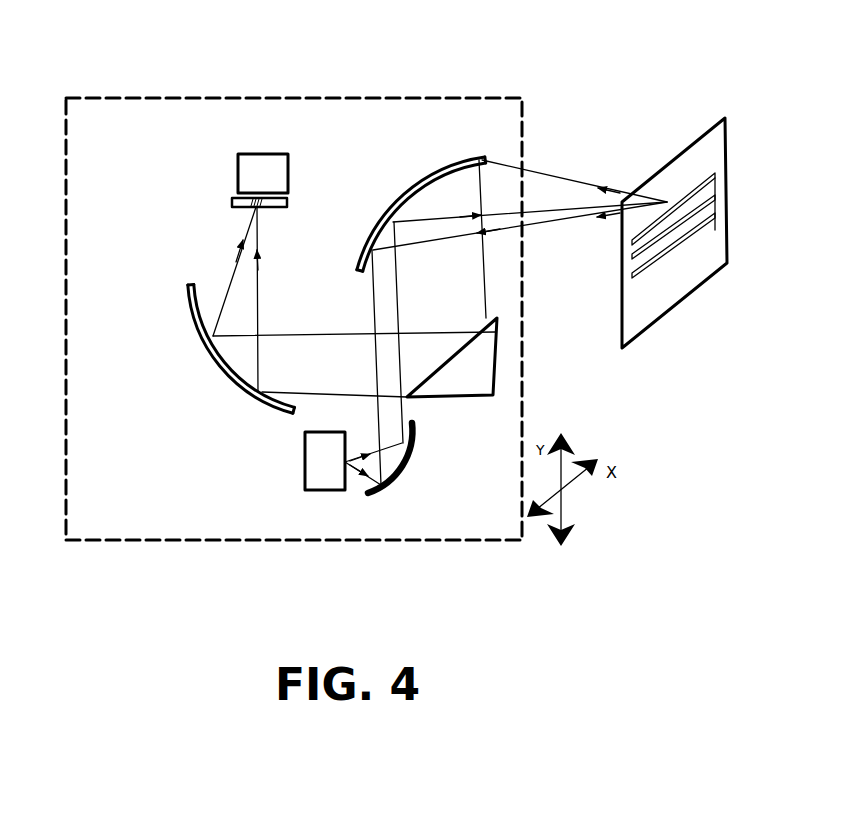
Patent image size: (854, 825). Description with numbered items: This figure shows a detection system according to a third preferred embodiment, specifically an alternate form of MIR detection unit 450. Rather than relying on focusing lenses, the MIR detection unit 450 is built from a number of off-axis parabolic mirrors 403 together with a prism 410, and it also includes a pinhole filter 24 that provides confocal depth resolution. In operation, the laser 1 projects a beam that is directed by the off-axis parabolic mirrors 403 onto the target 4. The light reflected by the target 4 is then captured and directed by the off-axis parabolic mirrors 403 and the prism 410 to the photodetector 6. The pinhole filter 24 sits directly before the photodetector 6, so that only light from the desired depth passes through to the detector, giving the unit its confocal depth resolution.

The MIR detection unit 450 is at (415, 97).
The off-axis parabolic mirrors 403 is at (450, 163).
The prism 410 is at (497, 357).
The target 4 is at (666, 200).
The photodetector 6 is at (263, 173).
The pinhole filter 24 is at (246, 203).
The laser 1 is at (325, 461).